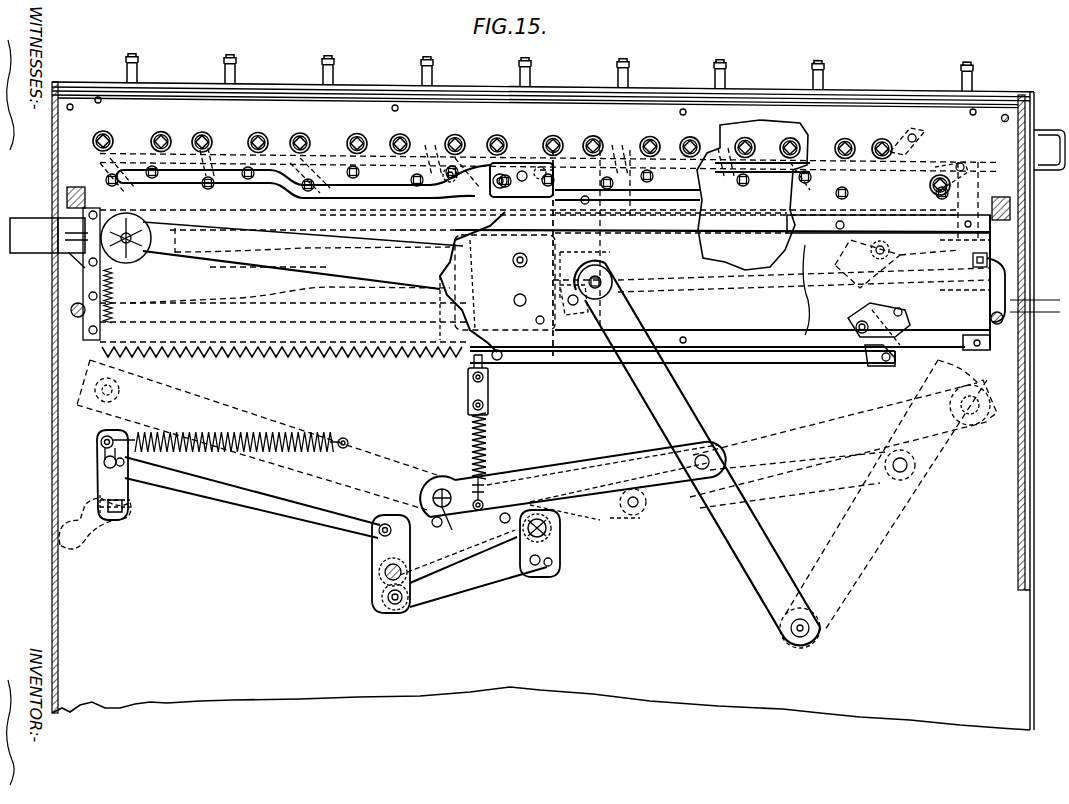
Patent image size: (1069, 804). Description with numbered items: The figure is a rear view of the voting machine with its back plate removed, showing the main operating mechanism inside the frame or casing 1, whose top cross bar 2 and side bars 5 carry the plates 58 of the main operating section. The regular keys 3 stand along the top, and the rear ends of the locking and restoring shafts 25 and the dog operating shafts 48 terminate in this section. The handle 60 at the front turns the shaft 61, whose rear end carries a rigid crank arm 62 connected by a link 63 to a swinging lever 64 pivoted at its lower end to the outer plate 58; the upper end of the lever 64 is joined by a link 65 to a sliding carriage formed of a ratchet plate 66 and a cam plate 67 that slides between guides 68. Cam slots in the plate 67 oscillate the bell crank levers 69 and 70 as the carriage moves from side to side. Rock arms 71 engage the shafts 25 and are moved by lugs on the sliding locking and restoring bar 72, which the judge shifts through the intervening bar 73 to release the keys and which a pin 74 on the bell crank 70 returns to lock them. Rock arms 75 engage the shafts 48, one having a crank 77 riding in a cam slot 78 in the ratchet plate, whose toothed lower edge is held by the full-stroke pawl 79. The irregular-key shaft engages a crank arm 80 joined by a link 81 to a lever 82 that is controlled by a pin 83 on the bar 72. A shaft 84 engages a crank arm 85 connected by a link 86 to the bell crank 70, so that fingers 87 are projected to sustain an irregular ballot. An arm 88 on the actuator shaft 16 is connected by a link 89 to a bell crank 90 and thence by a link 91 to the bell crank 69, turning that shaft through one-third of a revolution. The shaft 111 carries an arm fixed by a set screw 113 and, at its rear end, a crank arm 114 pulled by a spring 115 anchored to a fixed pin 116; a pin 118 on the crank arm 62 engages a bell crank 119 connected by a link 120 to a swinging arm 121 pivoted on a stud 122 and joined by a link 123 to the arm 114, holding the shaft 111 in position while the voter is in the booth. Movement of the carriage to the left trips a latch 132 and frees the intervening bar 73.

The frame 1 is at (58, 590).
The top rail 2 is at (580, 92).
The regular candidate indicators or keys 3 is at (224, 70).
The side bars 5 is at (78, 187).
The actuator shaft 16 is at (156, 134).
The locking and restoring shafts 25 is at (160, 180).
The dog operating shafts 48 is at (212, 176).
The plates of main operating section 58 is at (970, 340).
The main operating lever or handle 60 is at (383, 456).
The shaft 61 is at (560, 540).
The rigid crank arm 62 is at (445, 528).
The link 63 is at (585, 468).
The swinging lever 64 is at (760, 532).
The link 65 is at (415, 285).
The ratchet plate 66 is at (398, 355).
The cam plate 67 is at (588, 262).
The guides 68 is at (808, 260).
The bell crank lever 69 is at (462, 312).
The bell crank lever 70 is at (608, 272).
The rock arms 71 is at (228, 198).
The sliding locking and restoring bar 72 is at (755, 225).
The sliding intervening bar 73 is at (40, 240).
The pin 74 is at (585, 196).
The rock arms 75 is at (310, 158).
The crank 77 is at (512, 170).
The cam slot 78 is at (460, 178).
The full-stroke pawl 79 is at (480, 390).
The crank arm 80 is at (940, 177).
The link 81 is at (968, 182).
The lever 82 is at (948, 252).
The pin 83 is at (845, 225).
The shaft 84 is at (988, 253).
The crank arm 85 is at (965, 280).
The link 86 is at (720, 296).
The fingers 87 is at (1035, 306).
The arm 88 is at (908, 152).
The link 89 is at (912, 302).
The bell crank 90 is at (885, 364).
The link 91 is at (808, 358).
The shaft 111 is at (124, 508).
The set screw 113 is at (80, 535).
The crank arm 114 is at (97, 470).
The spring 115 is at (225, 435).
The fixed pin 116 is at (346, 438).
The pin 118 is at (505, 513).
The bell crank 119 is at (518, 565).
The link 120 is at (495, 580).
The lever or swinging arm 121 is at (380, 604).
The stud 122 is at (372, 572).
The link 123 is at (258, 512).
The latch 132 is at (72, 268).